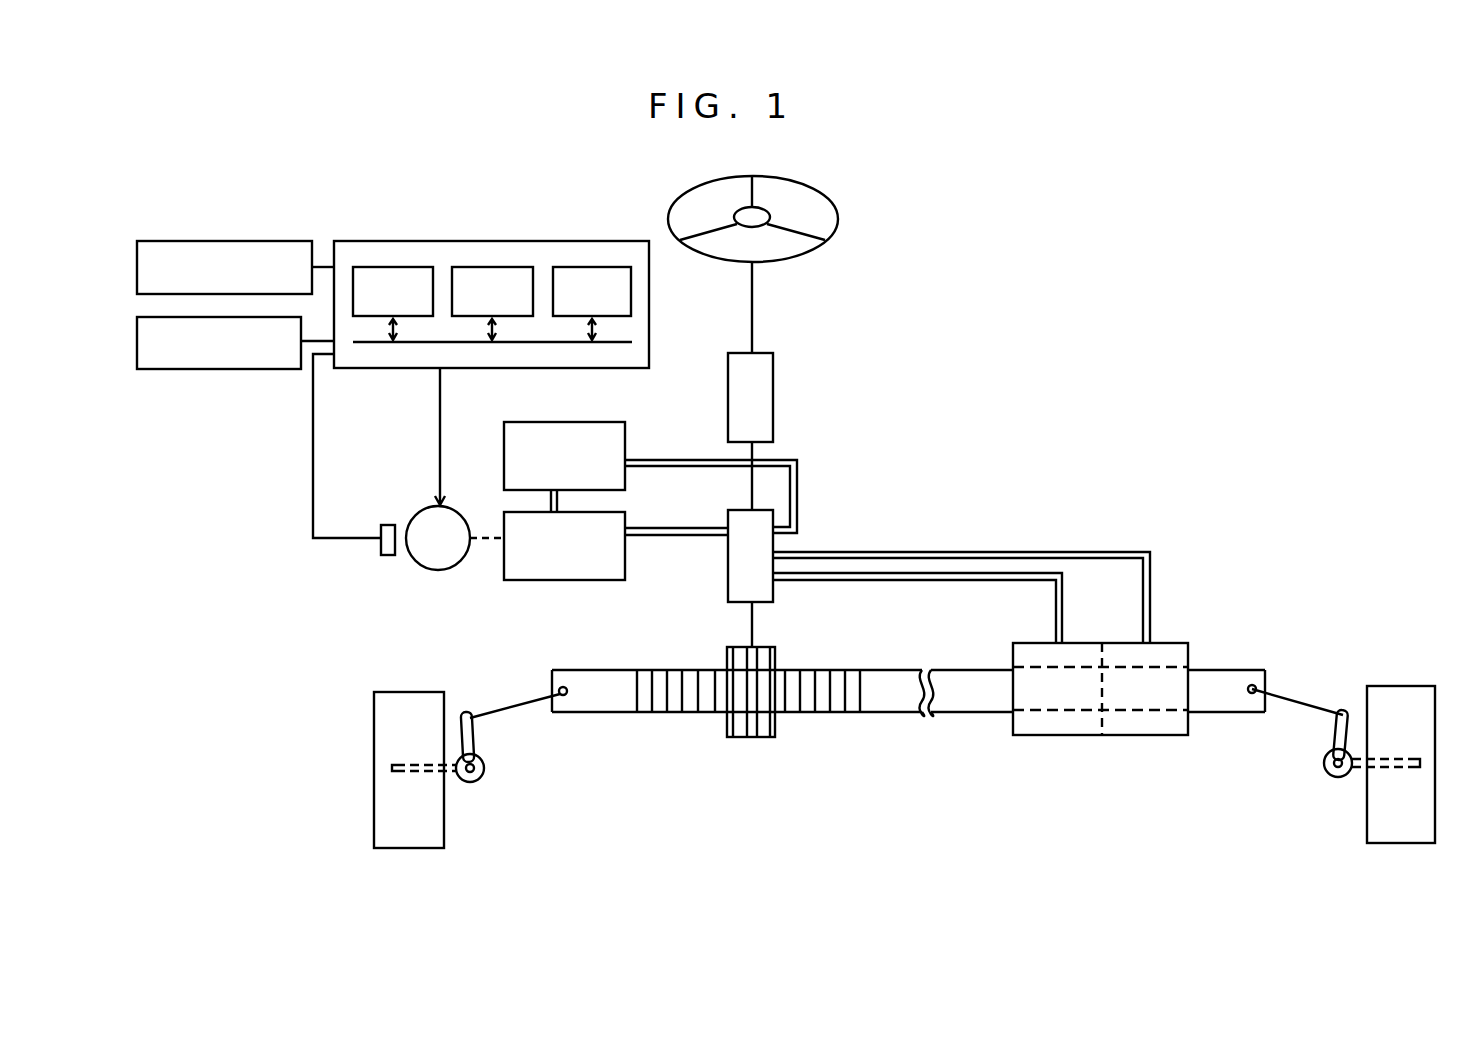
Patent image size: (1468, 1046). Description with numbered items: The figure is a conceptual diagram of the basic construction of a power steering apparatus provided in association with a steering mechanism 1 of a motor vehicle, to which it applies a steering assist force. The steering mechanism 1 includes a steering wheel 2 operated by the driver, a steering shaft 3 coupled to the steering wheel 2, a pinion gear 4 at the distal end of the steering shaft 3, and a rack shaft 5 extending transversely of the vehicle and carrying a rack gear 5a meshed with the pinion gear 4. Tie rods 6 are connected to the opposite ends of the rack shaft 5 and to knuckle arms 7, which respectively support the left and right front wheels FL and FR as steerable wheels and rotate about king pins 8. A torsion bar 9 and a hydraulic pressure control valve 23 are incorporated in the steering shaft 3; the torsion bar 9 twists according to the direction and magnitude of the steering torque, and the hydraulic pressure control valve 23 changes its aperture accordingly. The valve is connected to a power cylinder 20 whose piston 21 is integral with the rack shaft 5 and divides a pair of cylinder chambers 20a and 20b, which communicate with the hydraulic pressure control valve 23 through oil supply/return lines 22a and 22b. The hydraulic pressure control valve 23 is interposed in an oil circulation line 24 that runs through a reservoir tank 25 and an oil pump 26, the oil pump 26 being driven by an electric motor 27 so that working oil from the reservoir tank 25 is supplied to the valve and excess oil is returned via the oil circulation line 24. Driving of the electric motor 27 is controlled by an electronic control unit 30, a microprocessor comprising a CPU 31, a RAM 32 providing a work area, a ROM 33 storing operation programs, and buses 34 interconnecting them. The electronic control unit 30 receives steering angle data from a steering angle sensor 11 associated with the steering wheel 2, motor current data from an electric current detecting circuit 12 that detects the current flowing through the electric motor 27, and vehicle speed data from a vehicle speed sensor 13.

The steering mechanism 1 is at (876, 370).
The steering wheel 2 is at (795, 178).
The steering shaft 3 is at (752, 330).
The pinion gear 4 is at (743, 735).
The rack shaft 5 is at (908, 729).
The rack gear 5a is at (693, 703).
The tie rods 6 is at (512, 710).
The knuckle arms 7 is at (485, 768).
The king pins 8 is at (475, 777).
The torsion bar 9 is at (762, 405).
The steering angle sensor 11 is at (203, 242).
The electric current detecting circuit 12 is at (380, 550).
The vehicle speed sensor 13 is at (202, 370).
The power cylinder 20 is at (1139, 717).
The cylinder chamber 20a is at (1070, 722).
The cylinder chamber 20b is at (1158, 722).
The piston 21 is at (1102, 735).
The oil supply/return line 22a is at (977, 580).
The oil supply/return line 22b is at (1005, 550).
The hydraulic pressure control valve 23 is at (735, 565).
The oil circulation line 24 is at (797, 497).
The reservoir tank 25 is at (535, 422).
The oil pump 26 is at (545, 580).
The electric motor 27 is at (437, 565).
The electronic control unit 30 is at (617, 238).
The CPU 31 is at (395, 268).
The RAM 32 is at (585, 270).
The ROM 33 is at (502, 270).
The buses 34 is at (423, 343).
The right front wheel FR is at (433, 832).
The left front wheel FL is at (1378, 818).